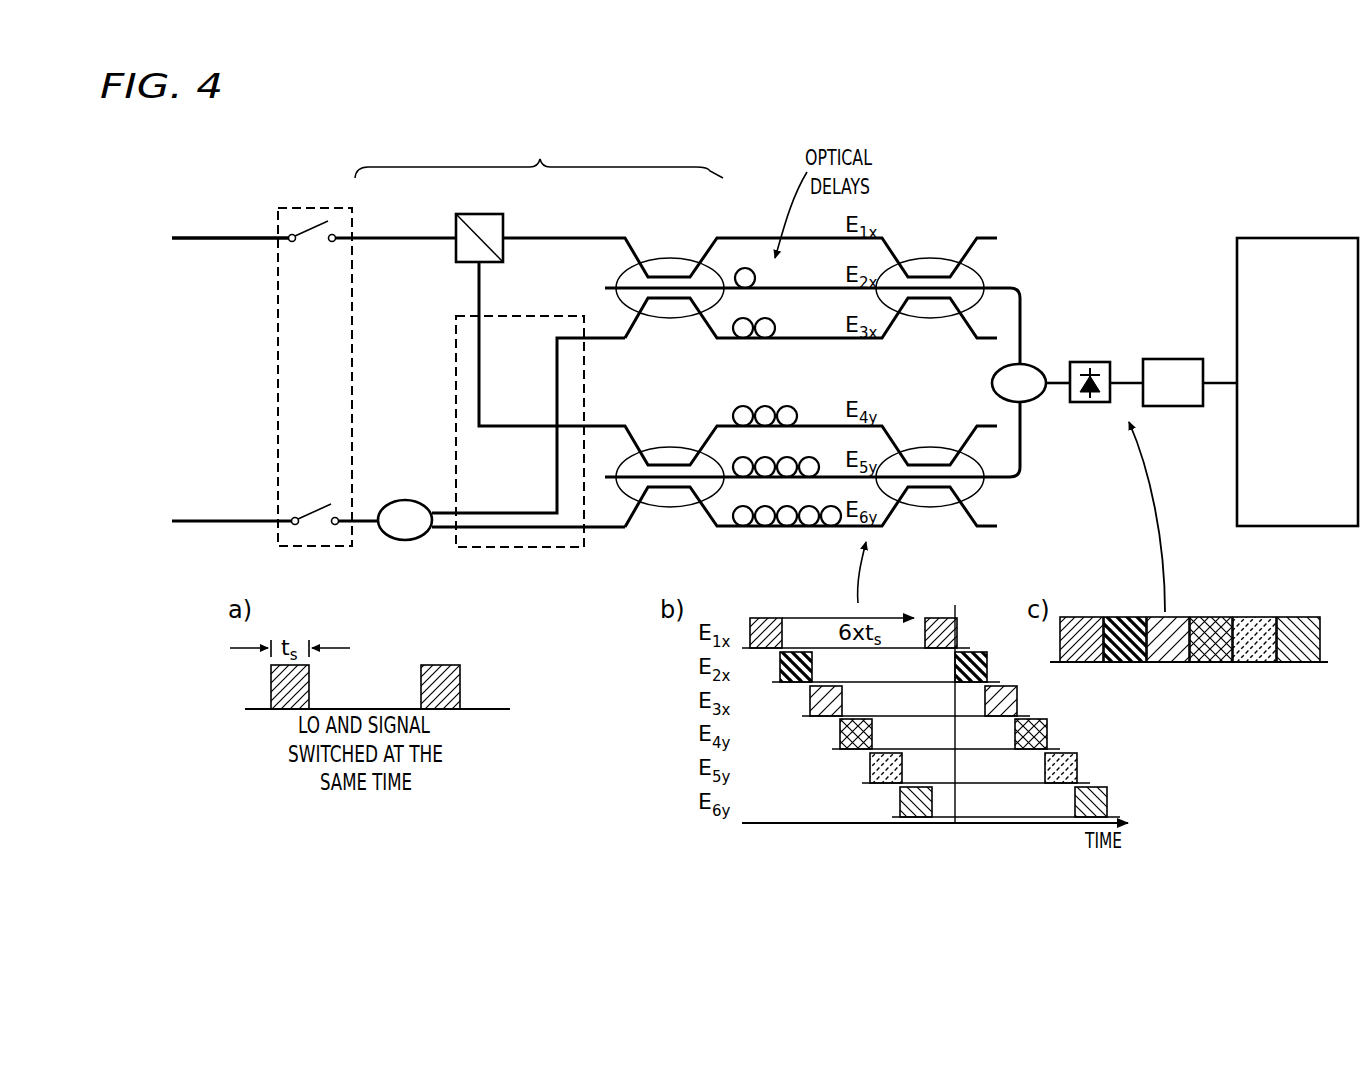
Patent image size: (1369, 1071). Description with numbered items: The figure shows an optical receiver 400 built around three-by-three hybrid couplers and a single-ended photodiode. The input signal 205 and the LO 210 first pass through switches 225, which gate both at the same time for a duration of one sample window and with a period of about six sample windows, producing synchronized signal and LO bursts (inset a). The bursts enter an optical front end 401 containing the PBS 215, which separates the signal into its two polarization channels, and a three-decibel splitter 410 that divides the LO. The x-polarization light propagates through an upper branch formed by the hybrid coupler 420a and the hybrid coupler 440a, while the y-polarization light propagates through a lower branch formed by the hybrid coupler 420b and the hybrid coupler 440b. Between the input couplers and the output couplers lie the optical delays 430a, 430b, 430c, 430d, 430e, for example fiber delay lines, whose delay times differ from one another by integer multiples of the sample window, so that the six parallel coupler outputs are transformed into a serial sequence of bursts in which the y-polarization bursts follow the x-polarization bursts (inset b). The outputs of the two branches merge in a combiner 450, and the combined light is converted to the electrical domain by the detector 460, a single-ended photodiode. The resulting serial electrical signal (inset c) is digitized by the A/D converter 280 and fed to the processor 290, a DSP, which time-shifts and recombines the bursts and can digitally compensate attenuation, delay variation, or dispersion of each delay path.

The optical receiver 400 is at (203, 156).
The optical front end 401 is at (539, 154).
The input signal 205 is at (224, 240).
The LO 210 is at (226, 523).
The switches 225 is at (300, 208).
The PBS 215 is at (456, 262).
The 3 dB splitter 410 is at (405, 500).
The hybrid coupler 420a is at (670, 233).
The hybrid coupler 420b is at (668, 510).
The optical delay 430a is at (769, 265).
The optical delay 430b is at (779, 315).
The optical delay 430c is at (789, 403).
The optical delay 430d is at (799, 453).
The optical delay 430e is at (809, 503).
The hybrid coupler 440a is at (928, 233).
The hybrid coupler 440b is at (928, 510).
The combiner 450 is at (992, 383).
The detector 460 is at (1090, 362).
The A/D converter 280 is at (1160, 359).
The processor 290 is at (1308, 238).